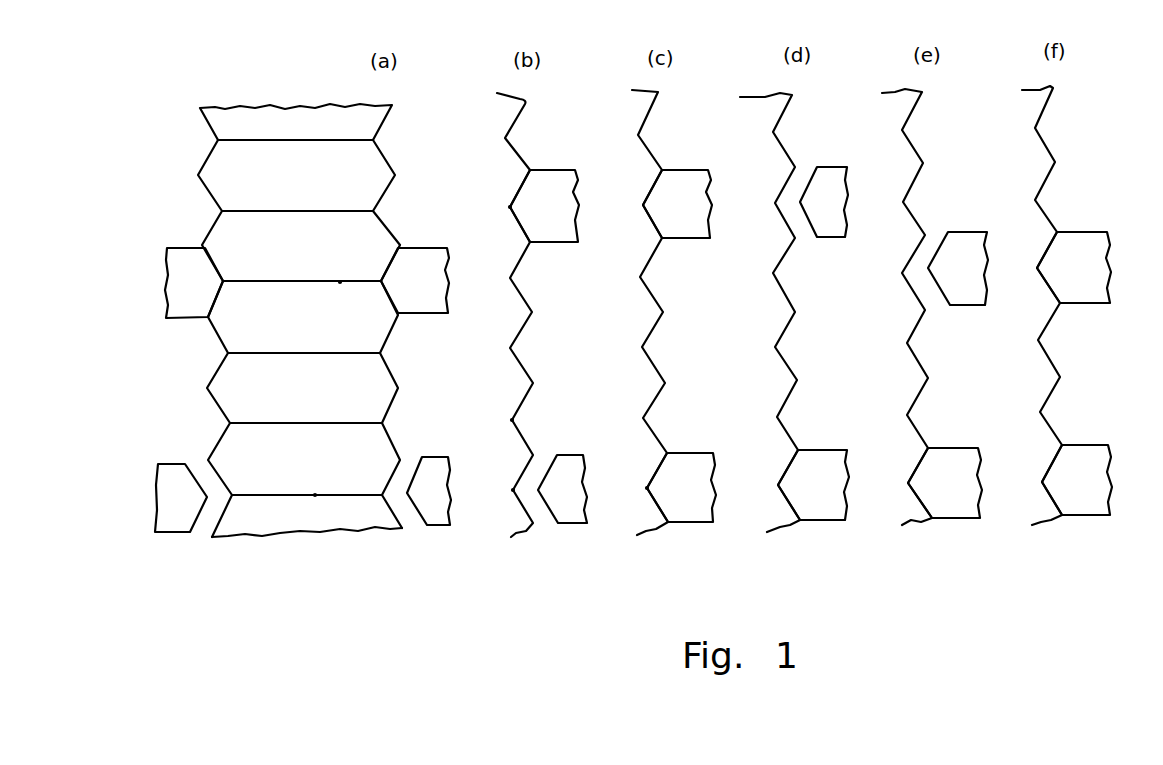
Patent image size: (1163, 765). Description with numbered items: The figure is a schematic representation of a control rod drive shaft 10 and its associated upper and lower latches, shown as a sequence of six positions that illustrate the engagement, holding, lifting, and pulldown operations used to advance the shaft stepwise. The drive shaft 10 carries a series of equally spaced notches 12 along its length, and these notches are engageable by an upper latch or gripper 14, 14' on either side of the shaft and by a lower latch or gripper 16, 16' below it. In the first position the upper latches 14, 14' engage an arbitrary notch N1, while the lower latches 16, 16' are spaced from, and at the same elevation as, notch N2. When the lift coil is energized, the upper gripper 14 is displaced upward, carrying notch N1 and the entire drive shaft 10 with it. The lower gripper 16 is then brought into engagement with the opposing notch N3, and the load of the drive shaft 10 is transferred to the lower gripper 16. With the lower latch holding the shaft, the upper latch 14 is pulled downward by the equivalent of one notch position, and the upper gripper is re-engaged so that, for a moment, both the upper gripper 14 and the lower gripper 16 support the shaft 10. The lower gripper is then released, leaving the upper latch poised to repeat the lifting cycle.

The drive shaft 10 is at (254, 98).
The notches 12 is at (373, 140).
The upper latch or gripper 14 is at (750, 210).
The upper latch or gripper 14' is at (188, 253).
The lower latch or gripper 16 is at (770, 463).
The lower latch or gripper 16' is at (176, 475).
The notch N1 is at (340, 282).
The notch N2 is at (315, 495).
The notch N3 is at (513, 490).